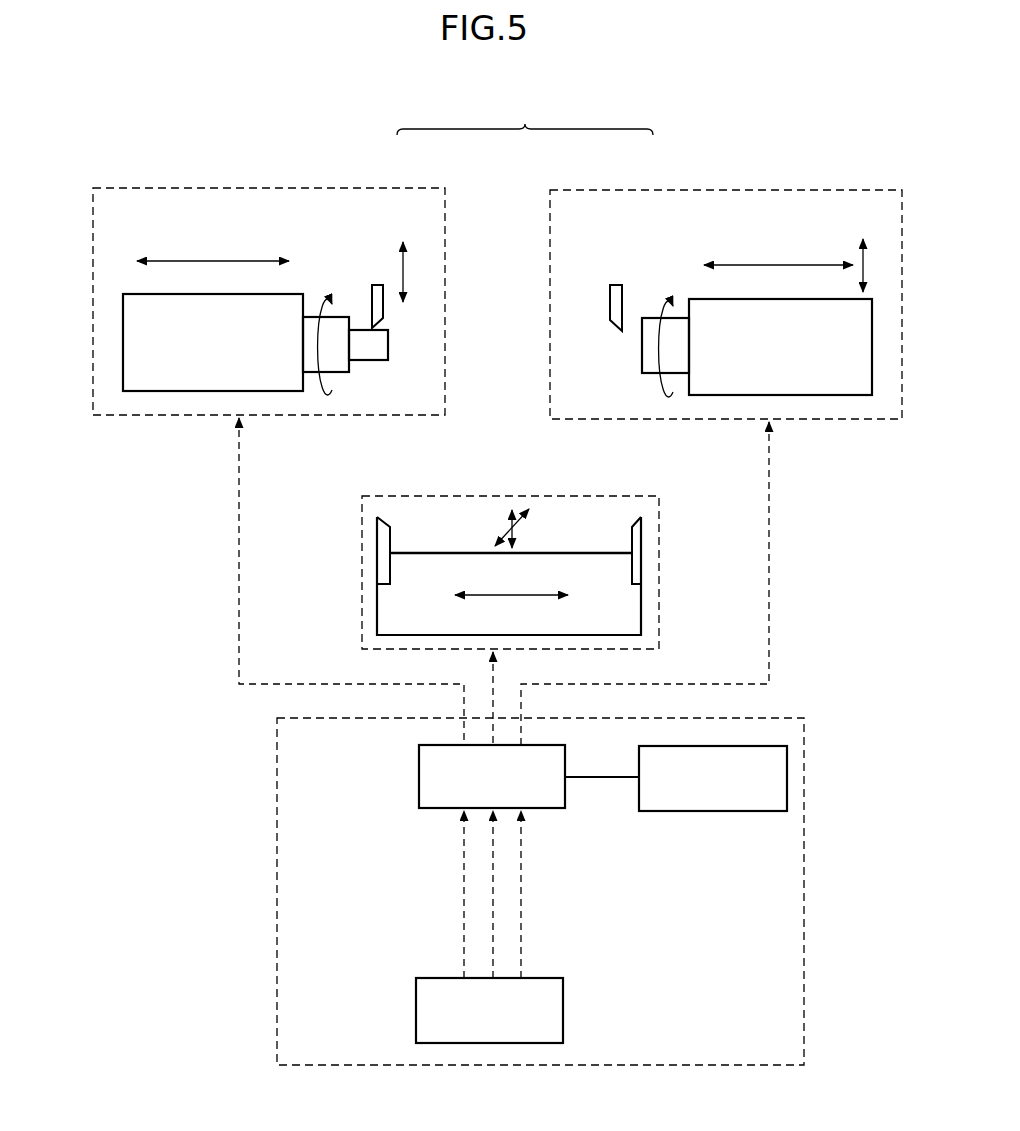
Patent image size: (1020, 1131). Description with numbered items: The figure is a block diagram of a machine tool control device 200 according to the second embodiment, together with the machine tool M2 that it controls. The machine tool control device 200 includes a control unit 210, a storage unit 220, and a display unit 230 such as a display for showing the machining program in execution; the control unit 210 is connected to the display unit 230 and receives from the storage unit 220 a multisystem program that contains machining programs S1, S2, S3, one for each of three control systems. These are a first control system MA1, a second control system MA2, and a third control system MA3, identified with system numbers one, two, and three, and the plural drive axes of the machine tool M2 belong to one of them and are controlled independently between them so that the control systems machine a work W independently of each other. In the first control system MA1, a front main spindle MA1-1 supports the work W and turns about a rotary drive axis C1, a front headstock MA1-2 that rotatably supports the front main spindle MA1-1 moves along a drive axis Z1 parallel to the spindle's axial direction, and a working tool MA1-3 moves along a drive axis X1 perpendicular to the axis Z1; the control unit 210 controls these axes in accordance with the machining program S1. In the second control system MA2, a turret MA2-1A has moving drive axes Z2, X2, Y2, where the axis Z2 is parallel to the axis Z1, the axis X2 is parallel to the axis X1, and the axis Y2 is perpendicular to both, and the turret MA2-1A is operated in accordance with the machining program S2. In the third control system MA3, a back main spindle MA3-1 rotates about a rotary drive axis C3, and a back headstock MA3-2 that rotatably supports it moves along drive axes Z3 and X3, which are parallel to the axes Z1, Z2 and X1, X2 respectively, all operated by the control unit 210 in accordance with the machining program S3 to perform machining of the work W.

The machine tool M2 is at (525, 118).
The first control system MA1 is at (397, 188).
The second control system MA2 is at (497, 496).
The third control system MA3 is at (600, 190).
The front main spindle MA1-1 is at (341, 357).
The front headstock MA1-2 is at (172, 357).
The working tool MA1-3 is at (378, 285).
The work W is at (371, 352).
The rotary drive axis C1 is at (327, 332).
The moving drive axis Z1 is at (213, 248).
The moving drive axis X1 is at (403, 257).
The back main spindle MA3-1 is at (650, 360).
The back headstock MA3-2 is at (818, 360).
The rotary drive axis C3 is at (667, 334).
The moving drive axis Z3 is at (778, 252).
The moving drive axis X3 is at (880, 265).
The turret MA2-1A is at (637, 615).
The moving drive axis Z2 is at (511, 609).
The moving drive axis Y2 is at (512, 530).
The moving drive axis X2 is at (512, 530).
The machine tool control device 200 is at (805, 832).
The control unit 210 is at (565, 757).
The storage unit 220 is at (563, 990).
The display unit 230 is at (787, 762).
The machining program S1 is at (387, 894).
The machining program S2 is at (580, 894).
The machining program S3 is at (493, 915).